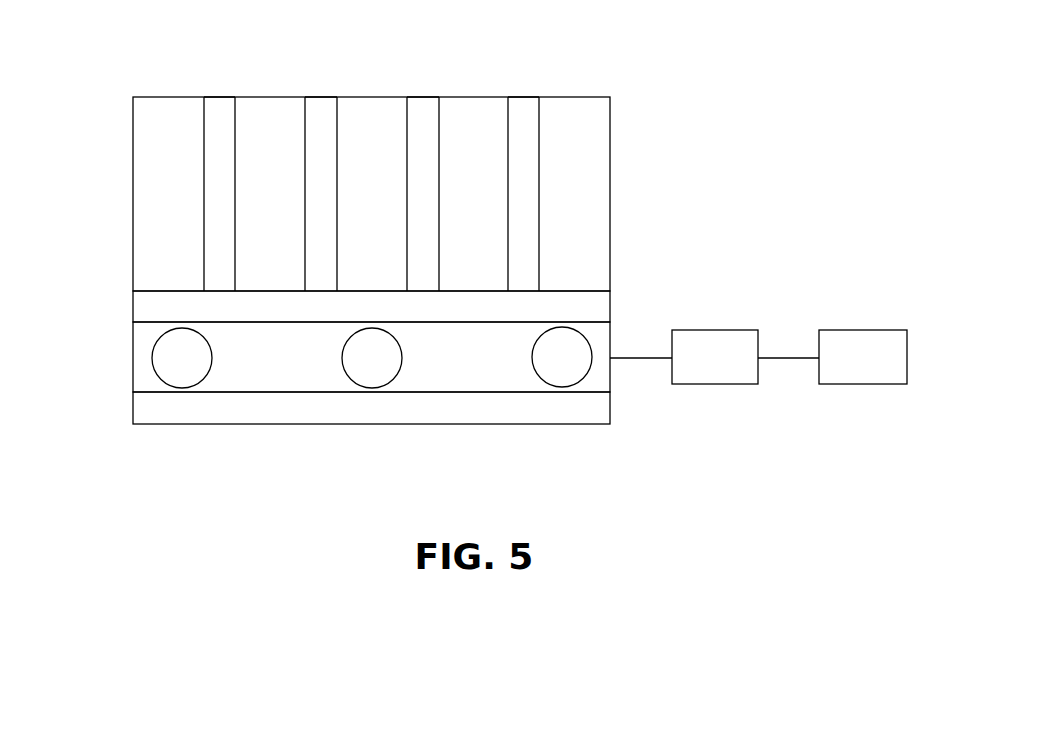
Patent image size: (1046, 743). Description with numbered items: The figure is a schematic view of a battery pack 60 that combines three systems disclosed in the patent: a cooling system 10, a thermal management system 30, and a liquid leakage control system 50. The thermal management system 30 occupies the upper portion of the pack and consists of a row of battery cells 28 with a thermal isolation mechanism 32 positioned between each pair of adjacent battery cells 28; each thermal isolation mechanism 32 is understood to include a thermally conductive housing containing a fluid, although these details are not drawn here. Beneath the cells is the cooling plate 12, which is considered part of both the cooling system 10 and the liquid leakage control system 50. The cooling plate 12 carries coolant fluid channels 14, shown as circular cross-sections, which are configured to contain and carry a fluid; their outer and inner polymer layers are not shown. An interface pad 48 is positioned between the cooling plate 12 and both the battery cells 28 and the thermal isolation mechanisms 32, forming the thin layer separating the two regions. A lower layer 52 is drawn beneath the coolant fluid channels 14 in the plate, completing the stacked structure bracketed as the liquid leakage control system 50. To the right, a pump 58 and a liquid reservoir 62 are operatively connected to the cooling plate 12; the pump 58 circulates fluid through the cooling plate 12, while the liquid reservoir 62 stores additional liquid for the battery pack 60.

The cooling system 10 is at (126, 357).
The cooling plate 12 is at (277, 360).
The coolant fluid channel 14 is at (207, 375).
The battery cell 28 is at (168, 110).
The thermal management system 30 is at (133, 176).
The thermal isolation mechanism 32 is at (221, 110).
The interface pad 48 is at (593, 305).
The liquid leakage control system 50 is at (93, 291).
The lower layer 52 is at (565, 405).
The pump 58 is at (713, 360).
The battery pack 60 is at (717, 117).
The liquid reservoir 62 is at (861, 360).